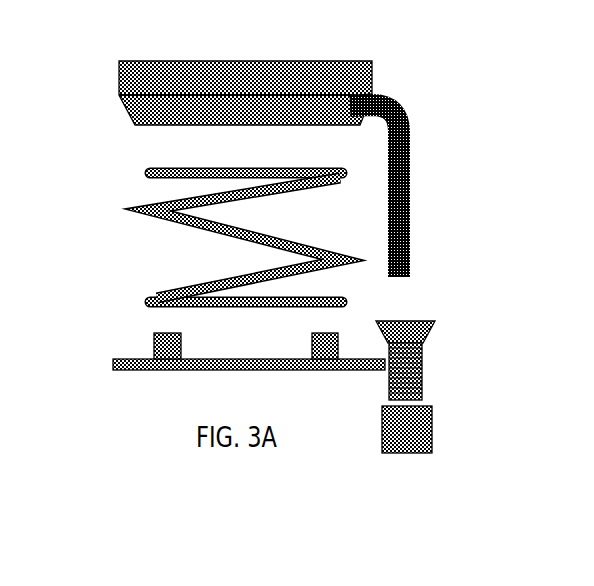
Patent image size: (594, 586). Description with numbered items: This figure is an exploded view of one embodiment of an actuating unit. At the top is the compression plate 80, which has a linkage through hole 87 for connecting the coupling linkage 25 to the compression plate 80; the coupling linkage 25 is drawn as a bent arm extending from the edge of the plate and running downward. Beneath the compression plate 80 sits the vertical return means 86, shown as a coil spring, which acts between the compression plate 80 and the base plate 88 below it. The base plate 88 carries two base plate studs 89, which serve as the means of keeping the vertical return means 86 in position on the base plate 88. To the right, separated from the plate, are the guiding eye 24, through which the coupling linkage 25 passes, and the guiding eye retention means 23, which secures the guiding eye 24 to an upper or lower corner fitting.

The compression plate 80 is at (155, 75).
The linkage through hole 87 is at (355, 95).
The coupling linkage 25 is at (410, 185).
The vertical return means 86 is at (233, 238).
The base plate 88 is at (132, 366).
The base plate studs 89 is at (313, 343).
The guiding eye 24 is at (412, 348).
The guiding eye retention means 23 is at (412, 432).